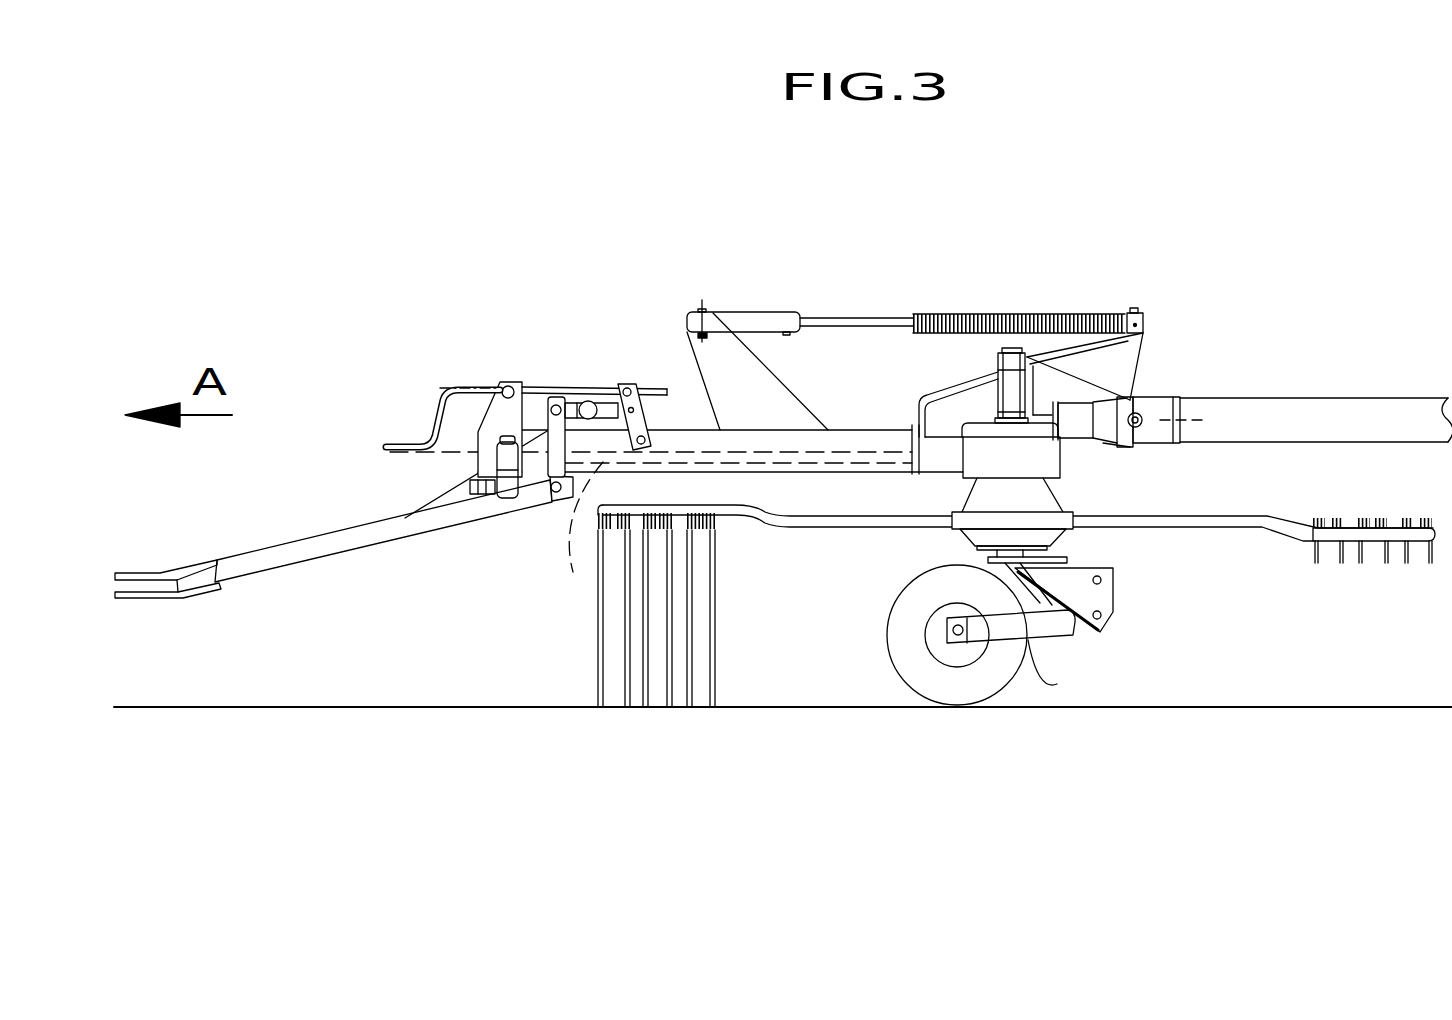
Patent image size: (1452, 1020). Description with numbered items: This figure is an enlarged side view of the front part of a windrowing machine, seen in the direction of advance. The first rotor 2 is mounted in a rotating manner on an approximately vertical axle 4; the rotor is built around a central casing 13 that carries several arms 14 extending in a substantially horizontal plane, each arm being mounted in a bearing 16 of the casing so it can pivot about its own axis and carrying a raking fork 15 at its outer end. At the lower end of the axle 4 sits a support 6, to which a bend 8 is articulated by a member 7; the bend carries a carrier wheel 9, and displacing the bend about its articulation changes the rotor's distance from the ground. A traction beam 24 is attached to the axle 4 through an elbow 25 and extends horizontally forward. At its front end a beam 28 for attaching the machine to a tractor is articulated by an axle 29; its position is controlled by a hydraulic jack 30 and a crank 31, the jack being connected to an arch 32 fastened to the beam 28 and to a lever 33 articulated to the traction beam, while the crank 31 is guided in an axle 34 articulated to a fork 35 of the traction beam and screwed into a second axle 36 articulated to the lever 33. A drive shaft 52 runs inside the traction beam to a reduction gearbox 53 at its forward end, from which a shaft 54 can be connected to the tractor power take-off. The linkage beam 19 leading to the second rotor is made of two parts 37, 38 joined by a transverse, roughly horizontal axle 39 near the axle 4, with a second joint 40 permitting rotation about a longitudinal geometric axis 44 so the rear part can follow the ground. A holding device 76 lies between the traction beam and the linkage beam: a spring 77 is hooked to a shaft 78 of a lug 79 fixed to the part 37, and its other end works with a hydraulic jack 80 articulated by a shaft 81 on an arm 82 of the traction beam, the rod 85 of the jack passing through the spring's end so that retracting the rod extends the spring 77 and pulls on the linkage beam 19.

The rotor 2 is at (843, 532).
The approximately vertical axle 4 is at (1013, 352).
The support 6 is at (1114, 588).
The articulation member 7 is at (1092, 627).
The bend 8 is at (1057, 684).
The carrier wheel 9 is at (900, 633).
The central casing 13 is at (1058, 534).
The arm 14 is at (1205, 524).
The raking fork 15 is at (1316, 553).
The bearing 16 is at (968, 522).
The linkage beam 19 is at (1217, 419).
The traction beam 24 is at (850, 431).
The elbow 25 is at (947, 403).
The beam 28 is at (307, 550).
The axle 29 is at (555, 495).
The hydraulic jack 30 is at (605, 405).
The crank 31 is at (455, 390).
The arch 32 is at (553, 418).
The lever 33 is at (642, 418).
The axle 34 is at (506, 386).
The fork 35 is at (493, 422).
The second axle 36 is at (659, 390).
The part 37 is at (1113, 407).
The part 38 is at (1362, 410).
The axle 39 is at (1128, 428).
The second joint 40 is at (1162, 447).
The longitudinal geometric axis 44 is at (1197, 420).
The drive shaft 52 is at (636, 584).
The reduction gearbox 53 is at (628, 462).
The shaft 54 is at (455, 487).
The holding device 76 is at (1019, 294).
The spring 77 is at (1082, 293).
The shaft 78 is at (1135, 312).
The lug 79 is at (1118, 353).
The hydraulic jack 80 is at (758, 317).
The shaft 81 is at (705, 312).
The arm 82 is at (745, 374).
The rod 85 is at (855, 319).